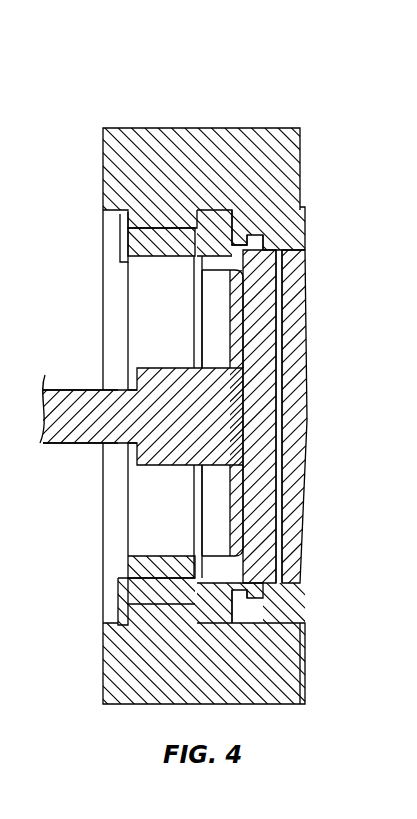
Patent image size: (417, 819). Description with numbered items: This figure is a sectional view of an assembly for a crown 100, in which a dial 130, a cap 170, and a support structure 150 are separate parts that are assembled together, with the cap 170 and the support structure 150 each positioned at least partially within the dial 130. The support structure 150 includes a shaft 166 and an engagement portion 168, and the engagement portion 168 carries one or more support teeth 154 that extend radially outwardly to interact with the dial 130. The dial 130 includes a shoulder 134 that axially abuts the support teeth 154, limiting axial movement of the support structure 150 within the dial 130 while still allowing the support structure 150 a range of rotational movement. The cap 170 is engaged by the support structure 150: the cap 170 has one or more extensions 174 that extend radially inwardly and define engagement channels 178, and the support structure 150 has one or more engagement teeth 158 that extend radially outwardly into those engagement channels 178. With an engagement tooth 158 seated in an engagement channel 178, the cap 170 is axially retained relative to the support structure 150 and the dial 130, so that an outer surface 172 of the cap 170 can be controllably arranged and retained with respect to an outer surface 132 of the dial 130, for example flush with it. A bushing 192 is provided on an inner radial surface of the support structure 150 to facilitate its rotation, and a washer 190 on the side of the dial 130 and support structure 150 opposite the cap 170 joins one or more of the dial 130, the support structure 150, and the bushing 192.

The crown 100 is at (78, 100).
The dial 130 is at (203, 140).
The outer surface 132 is at (300, 650).
The shoulder 134 is at (118, 208).
The support structure 150 is at (65, 438).
The support teeth 154 is at (253, 138).
The engagement teeth 158 is at (300, 252).
The shaft 166 is at (85, 390).
The engagement portion 168 is at (232, 292).
The cap 170 is at (307, 355).
The outer surface 172 is at (298, 432).
The extensions 174 is at (240, 232).
The engagement channels 178 is at (305, 238).
The washer 190 is at (127, 246).
The bushing 192 is at (150, 280).